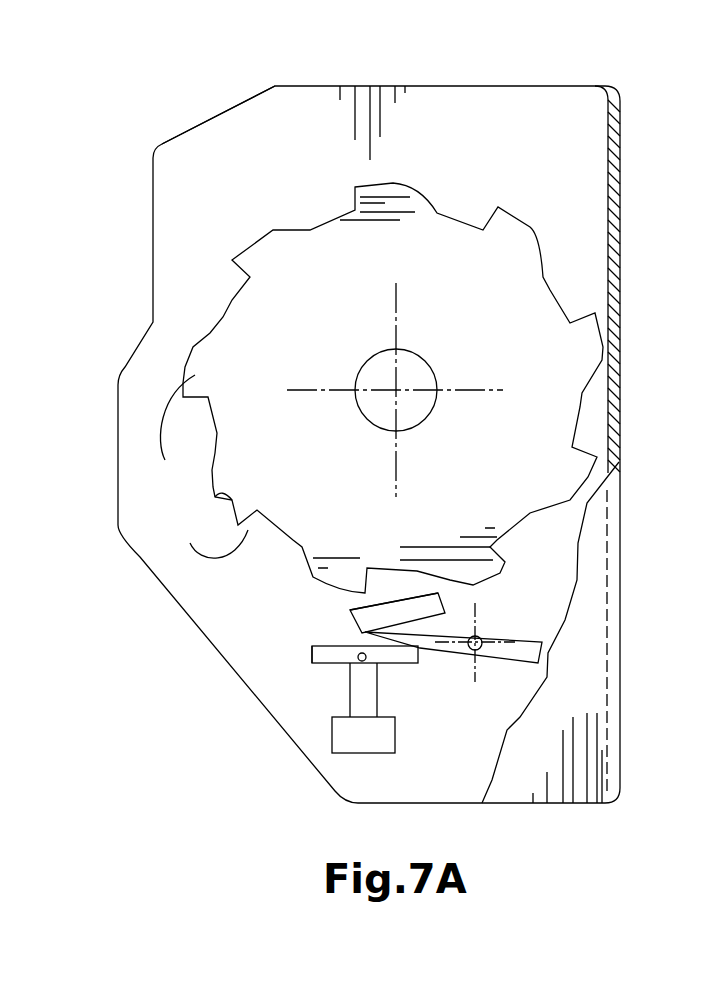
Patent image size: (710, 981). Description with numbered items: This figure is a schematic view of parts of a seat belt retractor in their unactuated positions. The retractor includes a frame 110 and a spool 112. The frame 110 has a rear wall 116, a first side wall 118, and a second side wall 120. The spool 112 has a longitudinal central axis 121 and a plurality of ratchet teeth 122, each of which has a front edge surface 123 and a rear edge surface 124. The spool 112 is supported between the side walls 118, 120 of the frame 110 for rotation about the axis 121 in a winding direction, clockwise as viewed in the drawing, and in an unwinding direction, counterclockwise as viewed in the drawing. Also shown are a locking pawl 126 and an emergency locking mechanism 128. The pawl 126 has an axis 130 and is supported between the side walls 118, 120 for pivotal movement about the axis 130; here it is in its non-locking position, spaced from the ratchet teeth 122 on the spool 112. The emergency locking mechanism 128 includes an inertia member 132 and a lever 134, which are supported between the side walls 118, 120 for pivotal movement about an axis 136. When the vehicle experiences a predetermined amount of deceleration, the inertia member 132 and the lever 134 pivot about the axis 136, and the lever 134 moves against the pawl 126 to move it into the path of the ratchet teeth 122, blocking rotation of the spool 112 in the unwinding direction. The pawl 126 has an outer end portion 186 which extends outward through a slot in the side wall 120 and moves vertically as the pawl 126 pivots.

The frame 110 is at (632, 108).
The spool 112 is at (292, 285).
The rear wall 116 is at (621, 161).
The first side wall 118 is at (213, 125).
The second side wall 120 is at (598, 503).
The longitudinal central axis 121 is at (396, 390).
The ratchet teeth 122 is at (228, 497).
The front edge surface 123 is at (198, 543).
The rear edge surface 124 is at (230, 510).
The locking pawl 126 is at (350, 620).
The emergency locking mechanism 128 is at (300, 648).
The axis 130 is at (487, 623).
The inertia member 132 is at (378, 738).
The lever 134 is at (312, 663).
The axis 136 is at (358, 661).
The outer end portion 186 is at (398, 610).